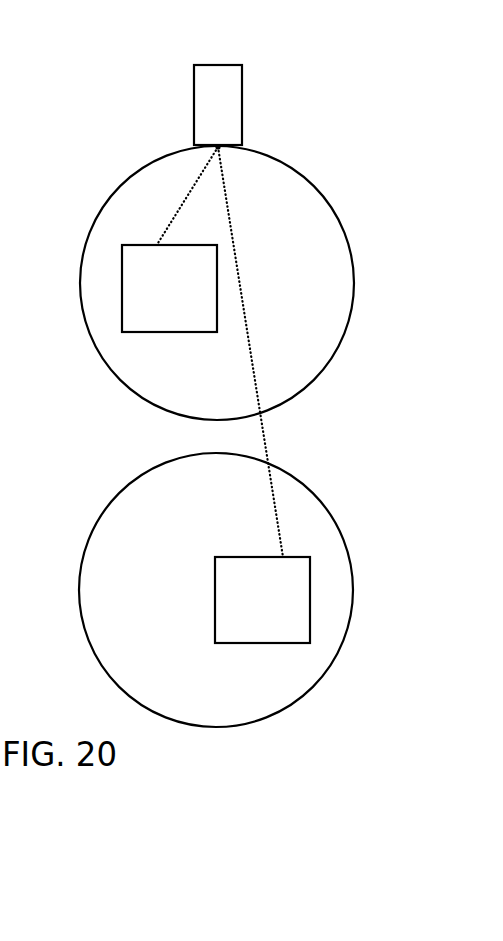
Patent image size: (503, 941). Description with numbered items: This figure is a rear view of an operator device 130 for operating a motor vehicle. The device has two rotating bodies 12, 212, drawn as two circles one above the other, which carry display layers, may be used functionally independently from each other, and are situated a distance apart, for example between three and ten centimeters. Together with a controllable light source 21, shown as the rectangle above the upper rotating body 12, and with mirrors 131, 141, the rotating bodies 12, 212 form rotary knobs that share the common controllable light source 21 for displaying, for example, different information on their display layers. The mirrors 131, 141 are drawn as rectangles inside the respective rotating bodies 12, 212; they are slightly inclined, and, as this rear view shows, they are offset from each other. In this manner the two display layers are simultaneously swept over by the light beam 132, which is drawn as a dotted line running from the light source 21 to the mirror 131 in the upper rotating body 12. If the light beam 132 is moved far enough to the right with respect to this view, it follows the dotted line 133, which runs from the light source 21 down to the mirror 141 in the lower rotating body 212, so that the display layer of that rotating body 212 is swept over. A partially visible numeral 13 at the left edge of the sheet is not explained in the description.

The reference numeral (partially visible) 13 is at (9, 64).
The rotating body 12 is at (297, 173).
The controllable light source 21 is at (218, 77).
The operator device 130 is at (277, 138).
The mirror 131 is at (130, 280).
The light beam 132 is at (187, 193).
The dotted line 133 is at (265, 437).
The mirror 141 is at (232, 579).
The rotating body 212 is at (303, 693).